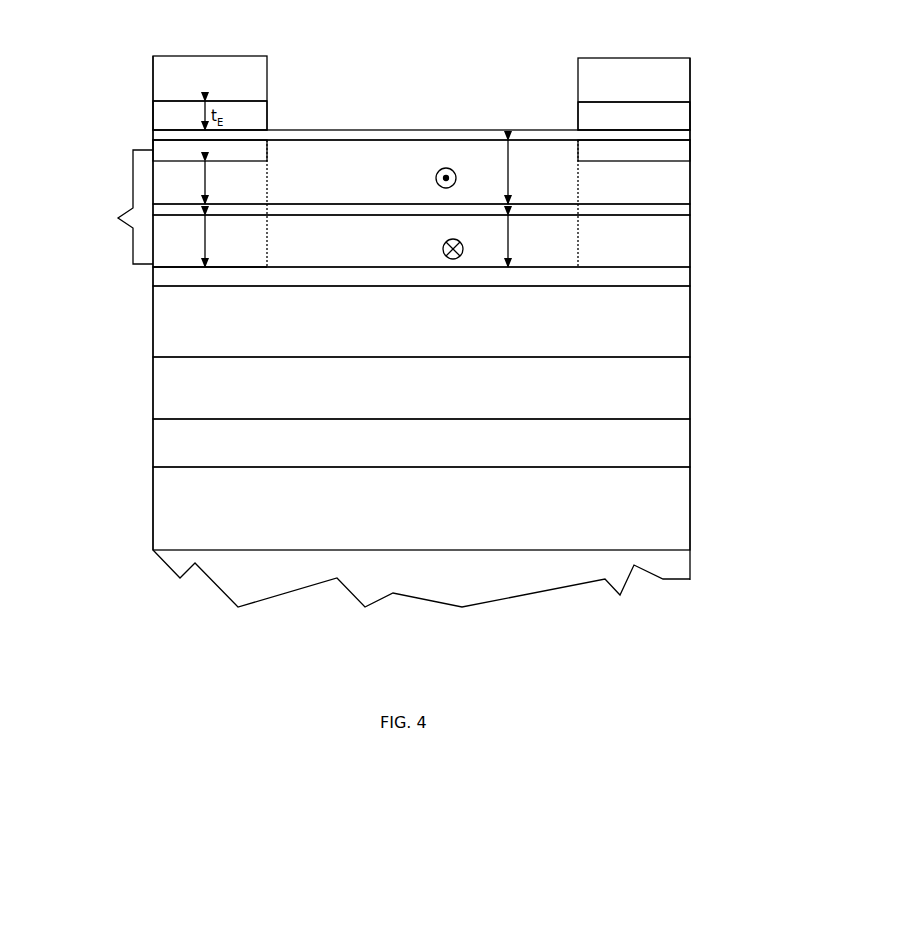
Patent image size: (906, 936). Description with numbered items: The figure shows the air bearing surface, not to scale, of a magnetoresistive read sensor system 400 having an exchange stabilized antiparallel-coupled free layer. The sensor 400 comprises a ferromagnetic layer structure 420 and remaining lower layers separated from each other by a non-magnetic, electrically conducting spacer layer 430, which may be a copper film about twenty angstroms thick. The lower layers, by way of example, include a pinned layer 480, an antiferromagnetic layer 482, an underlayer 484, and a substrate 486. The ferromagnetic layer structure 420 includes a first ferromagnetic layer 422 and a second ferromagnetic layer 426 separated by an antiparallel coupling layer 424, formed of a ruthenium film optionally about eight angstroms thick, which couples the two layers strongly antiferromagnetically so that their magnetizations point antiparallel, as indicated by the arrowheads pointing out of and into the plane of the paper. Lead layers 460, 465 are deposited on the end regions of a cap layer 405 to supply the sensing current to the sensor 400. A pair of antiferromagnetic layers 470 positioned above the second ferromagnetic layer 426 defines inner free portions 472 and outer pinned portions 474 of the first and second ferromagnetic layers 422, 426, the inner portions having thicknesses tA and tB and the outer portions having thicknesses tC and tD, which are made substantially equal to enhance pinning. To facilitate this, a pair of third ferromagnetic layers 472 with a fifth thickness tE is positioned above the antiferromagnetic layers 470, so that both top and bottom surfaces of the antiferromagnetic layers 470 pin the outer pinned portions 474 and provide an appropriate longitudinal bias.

The magnetoresistive read sensor system 400 is at (246, 682).
The cap layer 405 is at (580, 140).
The ferromagnetic layer structure 420 is at (118, 221).
The first ferromagnetic layer 422 is at (685, 245).
The antiparallel coupling layer 424 is at (678, 210).
The second ferromagnetic layer 426 is at (678, 182).
The spacer layer 430 is at (690, 277).
The lead layer 460 is at (162, 90).
The lead layer 465 is at (678, 73).
The antiferromagnetic layers 470 is at (182, 144).
The inner free portion / third ferromagnetic layer 472 is at (267, 117).
The outer pinned portion 474 is at (212, 270).
The pinned layer 480 is at (562, 332).
The antiferromagnetic layer 482 is at (557, 382).
The underlayer 484 is at (557, 432).
The substrate 486 is at (565, 492).